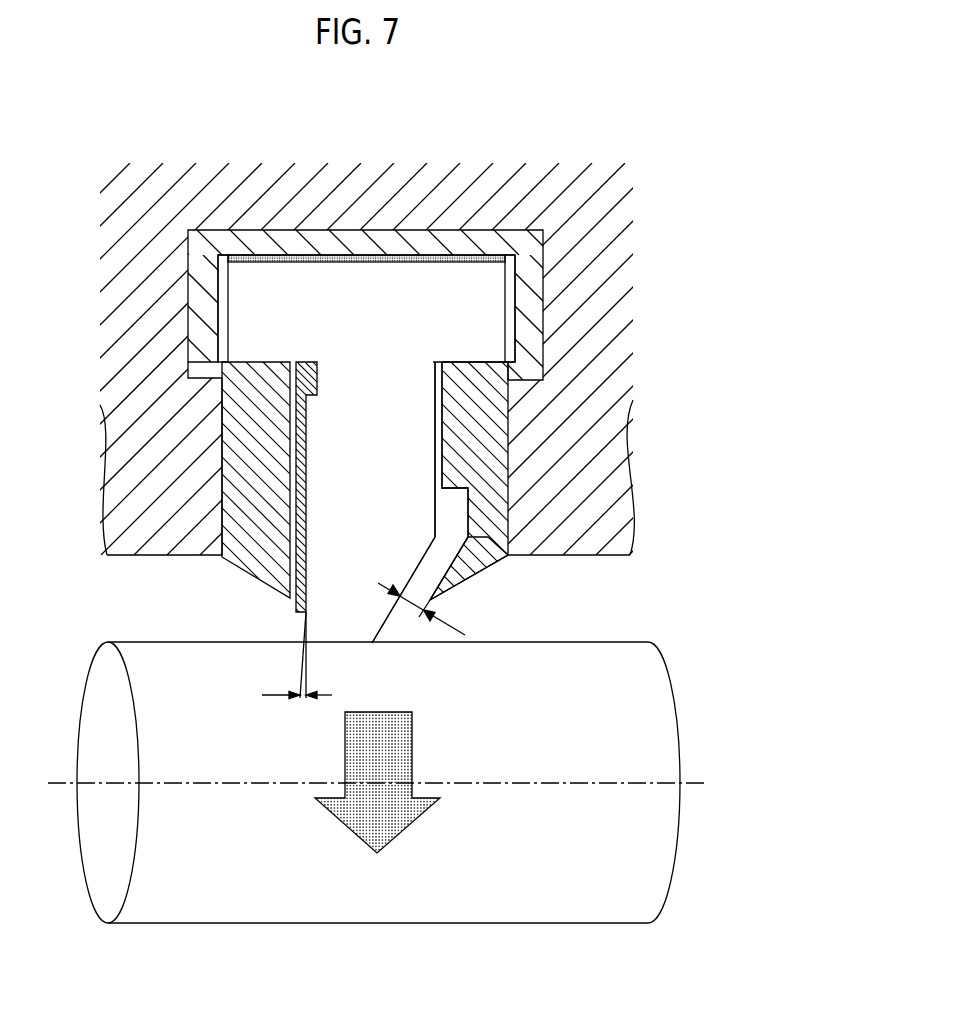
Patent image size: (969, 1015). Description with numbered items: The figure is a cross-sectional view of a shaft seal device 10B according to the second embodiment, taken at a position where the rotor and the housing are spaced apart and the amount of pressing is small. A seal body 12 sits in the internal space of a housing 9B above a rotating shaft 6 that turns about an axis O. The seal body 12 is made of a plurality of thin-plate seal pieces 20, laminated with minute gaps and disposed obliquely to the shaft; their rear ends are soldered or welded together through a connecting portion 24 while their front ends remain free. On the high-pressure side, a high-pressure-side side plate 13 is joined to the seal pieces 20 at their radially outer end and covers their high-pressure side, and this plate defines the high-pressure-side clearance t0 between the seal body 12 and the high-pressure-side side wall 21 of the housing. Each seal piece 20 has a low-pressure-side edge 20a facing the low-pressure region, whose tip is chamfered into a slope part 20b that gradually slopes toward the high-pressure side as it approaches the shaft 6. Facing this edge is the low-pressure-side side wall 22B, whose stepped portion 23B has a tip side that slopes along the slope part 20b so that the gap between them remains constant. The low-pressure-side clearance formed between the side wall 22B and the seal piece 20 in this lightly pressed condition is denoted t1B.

The shaft seal device 10B is at (484, 380).
The housing 9B is at (532, 288).
The seal body 12 is at (400, 308).
The thin-plate seal piece 20 is at (456, 413).
The connecting portion 24 is at (300, 256).
The high-pressure-side side wall 21 is at (240, 468).
The high-pressure-side side plate 13 is at (298, 515).
The low-pressure-side edge 20a is at (437, 400).
The slope part 20b is at (390, 610).
The low-pressure-side side wall 22B is at (493, 437).
The stepped portion 23B is at (475, 562).
The low-pressure-side clearance t1B is at (429, 609).
The high-pressure-side clearance t0 is at (296, 655).
The rotating shaft 6 is at (562, 908).
The axis O is at (55, 785).